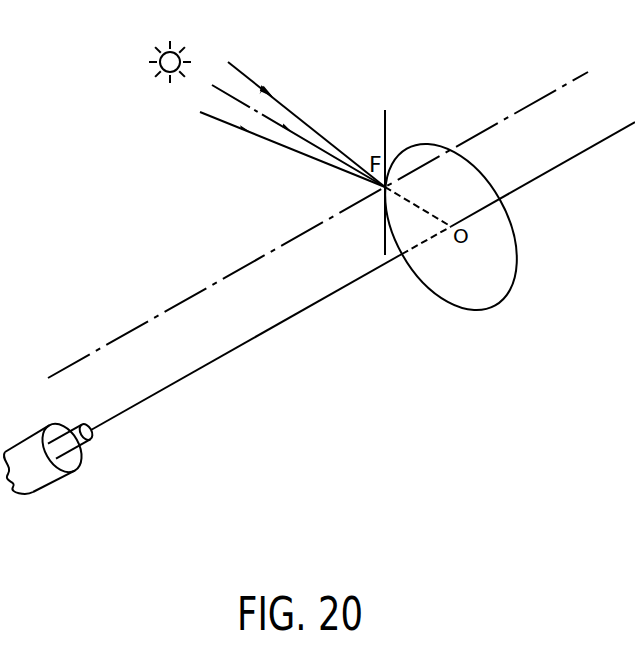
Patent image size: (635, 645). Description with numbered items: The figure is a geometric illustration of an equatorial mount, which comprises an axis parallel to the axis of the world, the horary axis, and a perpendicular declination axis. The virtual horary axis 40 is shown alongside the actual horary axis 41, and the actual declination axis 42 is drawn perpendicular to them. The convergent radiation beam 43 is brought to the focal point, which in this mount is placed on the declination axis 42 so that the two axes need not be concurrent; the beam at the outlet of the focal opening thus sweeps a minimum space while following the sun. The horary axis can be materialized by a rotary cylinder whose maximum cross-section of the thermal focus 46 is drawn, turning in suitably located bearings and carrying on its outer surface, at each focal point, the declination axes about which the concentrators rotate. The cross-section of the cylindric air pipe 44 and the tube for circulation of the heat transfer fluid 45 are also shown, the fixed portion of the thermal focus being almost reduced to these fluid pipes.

The virtual horary axis 40 is at (600, 141).
The actual horary axis 41 is at (529, 104).
The actual declination axis 42 is at (387, 137).
The convergent radiation beam 43 is at (295, 151).
The cross-section of the cylindric air pipe 44 is at (78, 462).
The tube for circulation of the heat transfer fluid 45 is at (86, 443).
The maximum cross-section of the thermal focus 46 is at (507, 305).